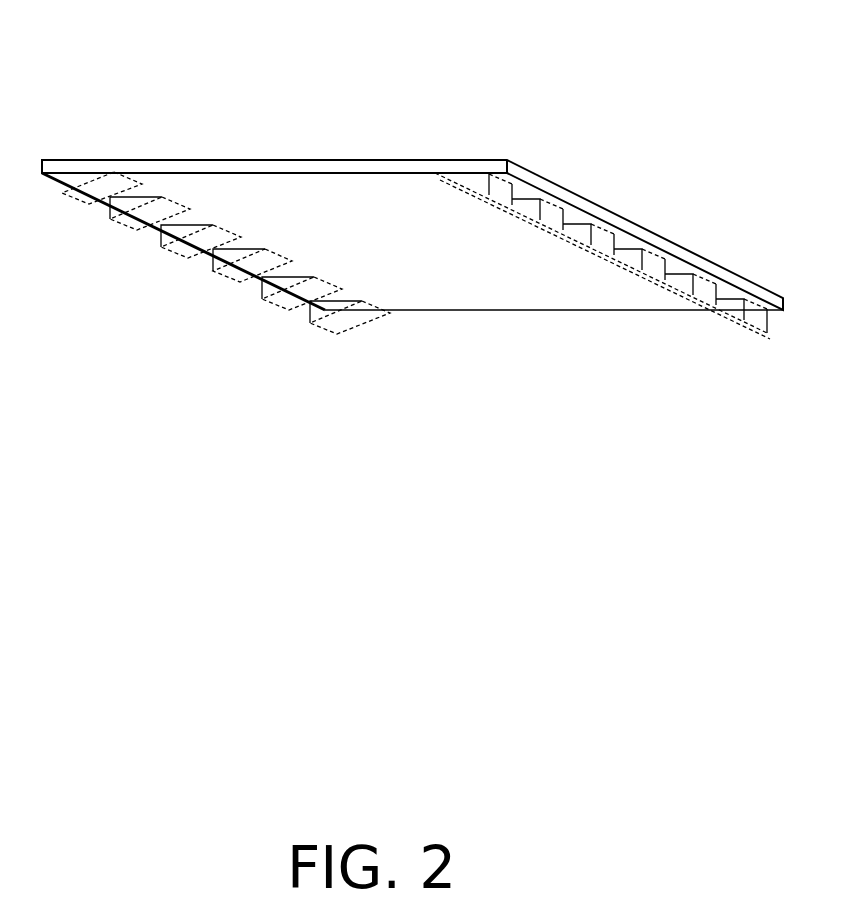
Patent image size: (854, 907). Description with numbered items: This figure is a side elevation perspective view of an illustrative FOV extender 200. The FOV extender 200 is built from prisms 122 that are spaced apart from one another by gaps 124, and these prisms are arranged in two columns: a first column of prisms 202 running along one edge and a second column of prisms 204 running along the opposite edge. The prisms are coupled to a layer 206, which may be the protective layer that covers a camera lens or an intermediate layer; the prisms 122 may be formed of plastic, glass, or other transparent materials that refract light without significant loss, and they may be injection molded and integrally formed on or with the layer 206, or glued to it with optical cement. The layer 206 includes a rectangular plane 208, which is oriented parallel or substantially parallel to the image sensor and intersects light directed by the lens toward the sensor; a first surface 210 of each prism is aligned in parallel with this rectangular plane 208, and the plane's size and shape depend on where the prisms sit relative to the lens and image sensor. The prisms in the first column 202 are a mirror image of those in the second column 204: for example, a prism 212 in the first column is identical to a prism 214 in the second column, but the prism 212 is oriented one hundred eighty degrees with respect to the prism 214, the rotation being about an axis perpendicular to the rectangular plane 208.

The FOV extender 200 is at (150, 41).
The layer 206 is at (183, 160).
The rectangular plane 208 is at (273, 187).
The first surface 210 is at (243, 248).
The prism 212 is at (328, 333).
The prism 214 is at (737, 303).
The first column of prisms 202 is at (363, 333).
The second column of prisms 204 is at (745, 335).
The prisms 122 is at (228, 278).
The gaps 124 is at (198, 262).